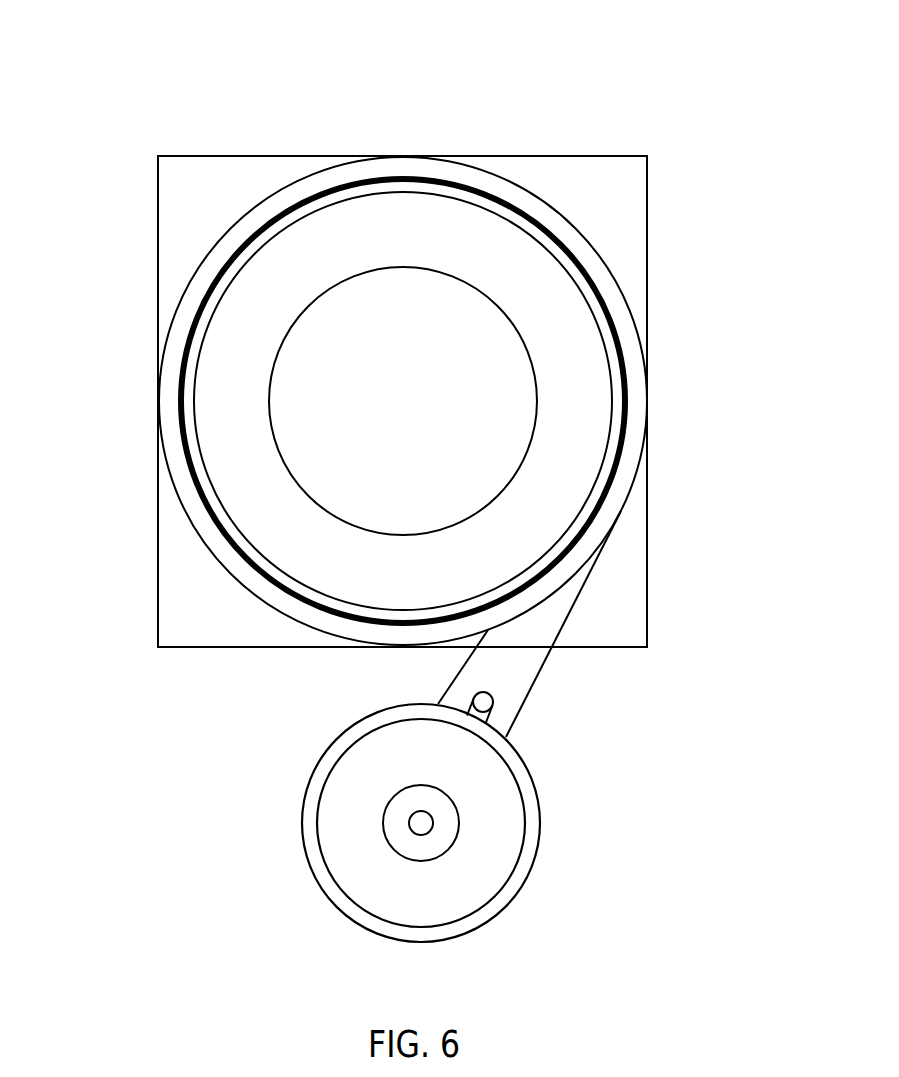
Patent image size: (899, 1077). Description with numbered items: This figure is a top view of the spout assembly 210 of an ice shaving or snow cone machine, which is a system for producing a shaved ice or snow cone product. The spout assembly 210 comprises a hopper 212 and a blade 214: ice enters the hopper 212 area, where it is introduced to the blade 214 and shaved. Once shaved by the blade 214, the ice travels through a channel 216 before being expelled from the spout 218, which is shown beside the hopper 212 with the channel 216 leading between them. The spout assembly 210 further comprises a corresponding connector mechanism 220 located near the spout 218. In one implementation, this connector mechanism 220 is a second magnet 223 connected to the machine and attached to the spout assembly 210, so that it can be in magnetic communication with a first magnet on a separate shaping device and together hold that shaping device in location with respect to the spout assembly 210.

The spout assembly 210 is at (155, 170).
The hopper 212 is at (404, 402).
The blade 214 is at (617, 335).
The channel 216 is at (510, 667).
The spout 218 is at (337, 806).
The connector mechanism 220 is at (490, 716).
The second magnet 223 is at (472, 697).